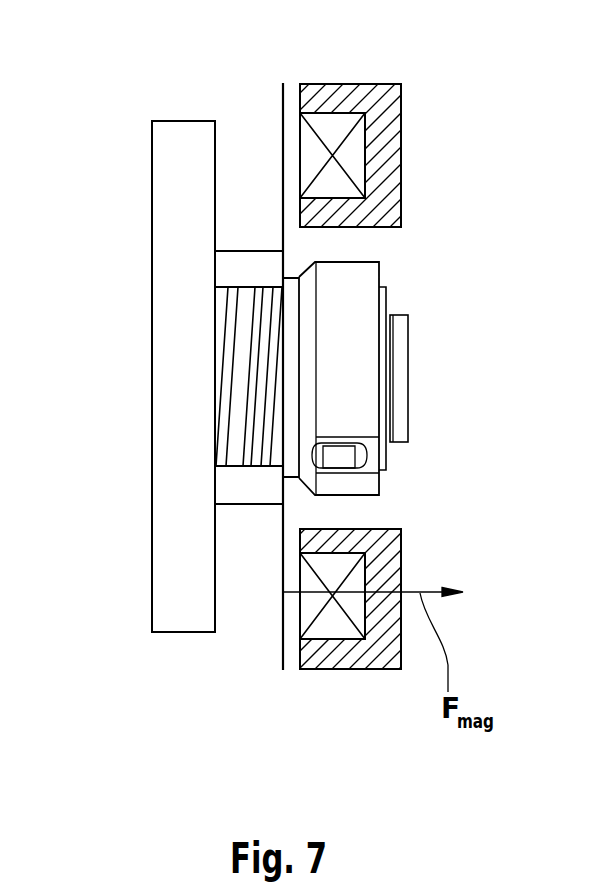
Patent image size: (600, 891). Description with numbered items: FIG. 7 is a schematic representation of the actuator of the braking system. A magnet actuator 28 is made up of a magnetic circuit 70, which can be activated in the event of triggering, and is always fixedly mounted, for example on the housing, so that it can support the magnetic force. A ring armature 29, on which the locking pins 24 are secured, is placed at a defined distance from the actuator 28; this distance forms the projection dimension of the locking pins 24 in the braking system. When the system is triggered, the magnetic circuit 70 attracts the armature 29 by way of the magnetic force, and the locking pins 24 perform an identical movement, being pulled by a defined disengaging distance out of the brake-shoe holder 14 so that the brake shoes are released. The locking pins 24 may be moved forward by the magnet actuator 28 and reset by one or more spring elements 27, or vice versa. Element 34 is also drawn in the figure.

The brake-shoe holder 14 is at (173, 416).
The locking pins 24 is at (233, 271).
The spring elements 27 is at (230, 343).
The magnet actuator 28 is at (358, 343).
The magnetic circuit 70 is at (333, 113).
The ring armature 29 is at (283, 490).
The armature disk 34 is at (292, 363).